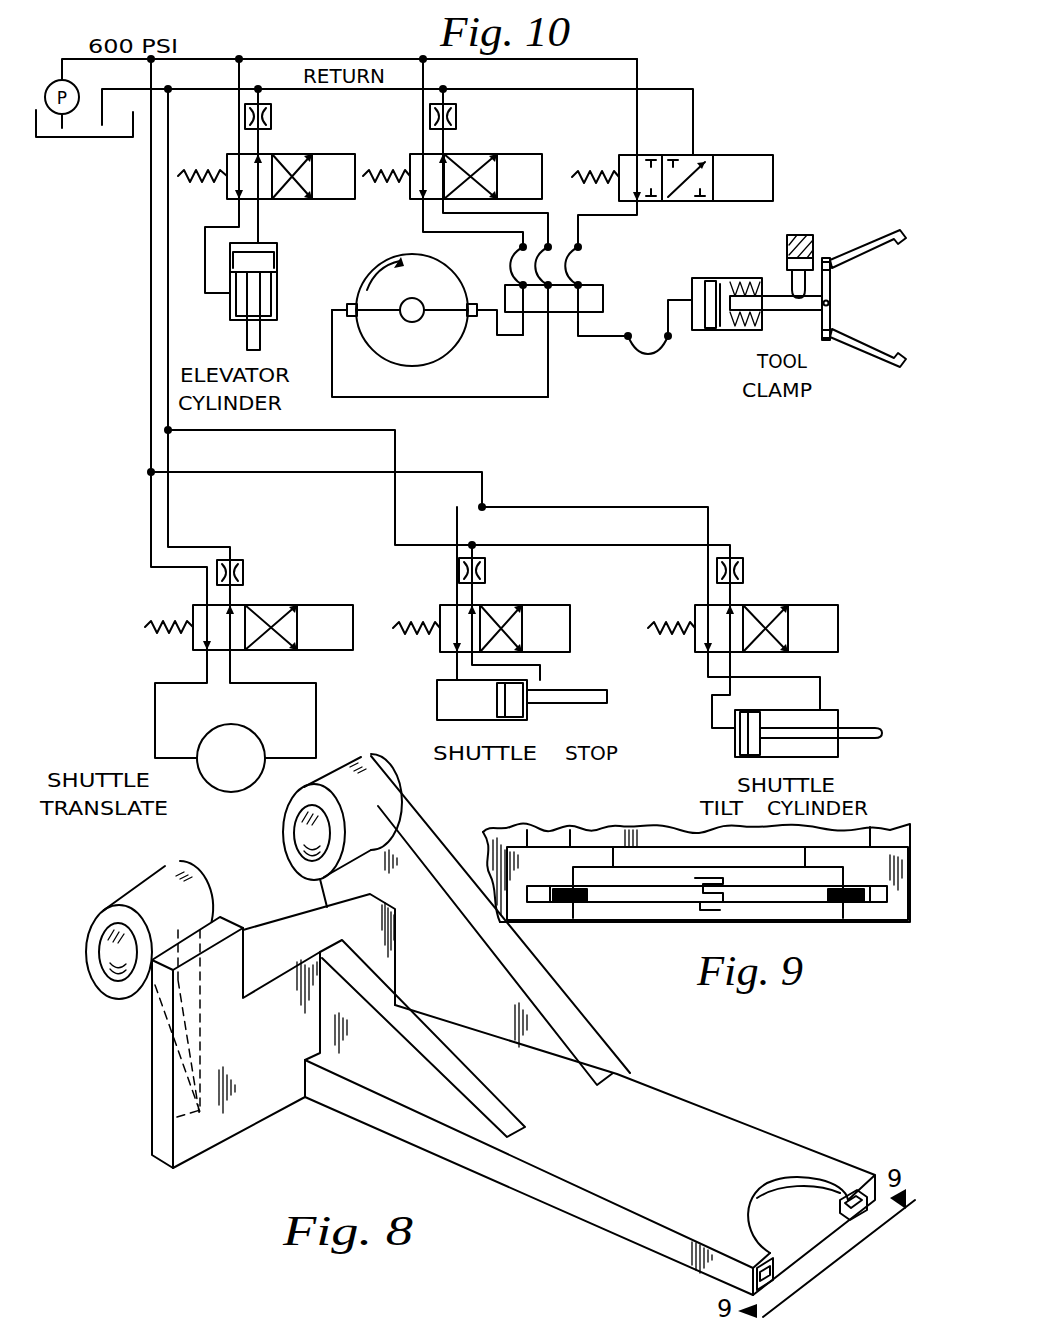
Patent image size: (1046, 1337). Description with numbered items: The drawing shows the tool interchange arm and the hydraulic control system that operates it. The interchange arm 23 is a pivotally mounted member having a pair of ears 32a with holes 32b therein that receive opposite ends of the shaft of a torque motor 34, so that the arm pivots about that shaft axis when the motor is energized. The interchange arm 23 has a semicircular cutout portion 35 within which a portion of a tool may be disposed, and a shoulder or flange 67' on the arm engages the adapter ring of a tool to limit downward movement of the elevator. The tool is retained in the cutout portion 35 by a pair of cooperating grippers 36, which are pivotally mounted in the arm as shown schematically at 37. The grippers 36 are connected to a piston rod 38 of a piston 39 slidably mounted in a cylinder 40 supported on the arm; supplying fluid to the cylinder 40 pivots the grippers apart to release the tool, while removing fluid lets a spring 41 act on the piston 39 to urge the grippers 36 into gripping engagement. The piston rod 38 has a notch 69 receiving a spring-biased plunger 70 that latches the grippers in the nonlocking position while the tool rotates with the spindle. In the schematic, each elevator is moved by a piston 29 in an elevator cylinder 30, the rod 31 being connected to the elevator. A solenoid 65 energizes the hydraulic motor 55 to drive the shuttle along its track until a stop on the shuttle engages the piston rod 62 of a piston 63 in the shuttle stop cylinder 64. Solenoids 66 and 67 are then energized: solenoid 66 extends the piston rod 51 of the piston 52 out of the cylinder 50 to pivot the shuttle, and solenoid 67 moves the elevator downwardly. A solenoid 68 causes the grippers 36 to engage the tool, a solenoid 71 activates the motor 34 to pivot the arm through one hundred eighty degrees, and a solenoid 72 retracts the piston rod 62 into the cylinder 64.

In FIG. 10, the solenoid 67 is at (266, 151).
In FIG. 10, the solenoid 71 is at (505, 154).
In FIG. 10, the solenoid 68 is at (720, 155).
In FIG. 10, the piston 29 is at (277, 258).
In FIG. 10, the cylinder 30 is at (278, 284).
In FIG. 10, the rod 31 is at (261, 339).
In FIG. 10, the motor 34 is at (394, 362).
In FIG. 10, the cylinder 40 is at (707, 278).
In FIG. 10, the piston 39 is at (719, 327).
In FIG. 10, the spring 41 is at (757, 330).
In FIG. 10, the piston rod 38 is at (774, 311).
In FIG. 10, the pivotal mounting 37 is at (831, 277).
In FIG. 10, the grippers 36 is at (884, 233).
In FIG. 9, the grippers 36 is at (568, 905).
In FIG. 8, the grippers 36 is at (852, 1215).
In FIG. 10, the spring-biased plunger 70 is at (791, 273).
In FIG. 10, the notch 69 is at (788, 288).
In FIG. 10, the solenoid 65 is at (340, 605).
In FIG. 10, the solenoid 72 is at (545, 605).
In FIG. 10, the solenoid 66 is at (805, 605).
In FIG. 10, the hydraulic motor 55 is at (237, 792).
In FIG. 10, the cylinder 64 is at (437, 685).
In FIG. 10, the piston 63 is at (516, 718).
In FIG. 10, the piston rod 62 is at (558, 690).
In FIG. 10, the cylinder 50 is at (840, 712).
In FIG. 10, the piston 52 is at (743, 740).
In FIG. 10, the piston rod 51 is at (855, 738).
In FIG. 9, the interchange arm 23 is at (569, 932).
In FIG. 8, the interchange arm 23 is at (540, 1205).
In FIG. 8, the ears 32a is at (165, 874).
In FIG. 8, the holes 32b is at (104, 978).
In FIG. 8, the semicircular cutout portion 35 is at (785, 1210).
In FIG. 9, the shoulder or flange 67' is at (707, 852).
In FIG. 8, the shoulder or flange 67' is at (798, 1214).